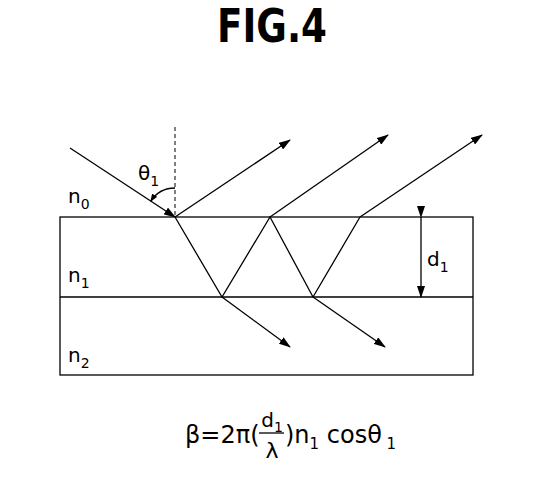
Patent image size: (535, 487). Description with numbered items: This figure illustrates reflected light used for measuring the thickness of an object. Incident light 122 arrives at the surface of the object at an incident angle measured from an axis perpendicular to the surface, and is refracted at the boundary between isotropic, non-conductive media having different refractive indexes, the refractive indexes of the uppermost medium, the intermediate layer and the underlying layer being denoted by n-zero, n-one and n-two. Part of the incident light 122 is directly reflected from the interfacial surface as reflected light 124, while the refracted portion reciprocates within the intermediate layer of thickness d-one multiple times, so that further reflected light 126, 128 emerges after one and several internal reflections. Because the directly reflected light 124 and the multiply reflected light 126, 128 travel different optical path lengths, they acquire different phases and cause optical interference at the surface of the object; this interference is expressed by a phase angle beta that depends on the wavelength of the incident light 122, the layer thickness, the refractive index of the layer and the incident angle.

The incident light 122 is at (97, 163).
The reflected light 124 is at (257, 162).
The reflected light 126 is at (348, 162).
The reflected light 128 is at (442, 162).